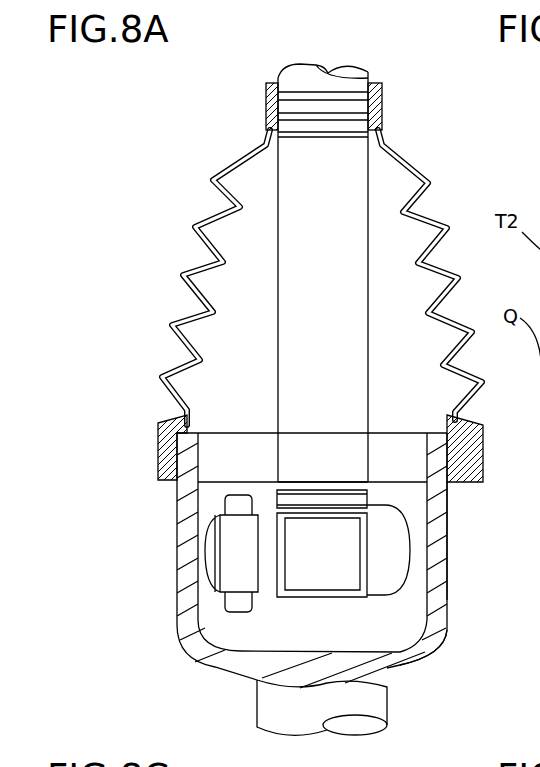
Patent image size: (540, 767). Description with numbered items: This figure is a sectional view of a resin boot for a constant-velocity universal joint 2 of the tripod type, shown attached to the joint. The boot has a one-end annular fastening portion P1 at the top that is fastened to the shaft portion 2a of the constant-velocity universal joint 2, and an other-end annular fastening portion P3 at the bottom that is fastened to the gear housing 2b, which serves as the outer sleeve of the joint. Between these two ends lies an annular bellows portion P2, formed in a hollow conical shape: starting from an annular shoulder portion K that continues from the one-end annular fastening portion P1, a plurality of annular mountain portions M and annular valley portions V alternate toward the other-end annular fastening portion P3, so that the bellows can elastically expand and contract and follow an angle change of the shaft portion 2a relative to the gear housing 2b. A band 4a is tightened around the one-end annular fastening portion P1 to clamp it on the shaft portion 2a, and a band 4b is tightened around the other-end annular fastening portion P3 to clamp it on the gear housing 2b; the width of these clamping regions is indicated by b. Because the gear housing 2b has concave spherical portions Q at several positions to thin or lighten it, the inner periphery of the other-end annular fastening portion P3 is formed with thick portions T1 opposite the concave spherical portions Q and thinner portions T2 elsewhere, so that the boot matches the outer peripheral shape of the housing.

The constant-velocity universal joint 2 is at (452, 656).
The shaft portion 2a is at (372, 79).
The gear housing 2b is at (178, 604).
The band to be fastened to one end 4a is at (384, 118).
The band to be fastened to the other end 4b is at (483, 446).
The annular shoulder portion K is at (413, 168).
The annular mountain portion M is at (213, 181).
The annular valley portion V is at (242, 207).
The one-end annular fastening portion P1 is at (252, 105).
The annular bellows portion P2 is at (180, 190).
The other-end annular fastening portion P3 is at (152, 432).
The thick portion T1 is at (465, 474).
The thin portion T2 is at (167, 482).
The concave spherical portion Q is at (447, 592).
The clamp band width b is at (118, 469).